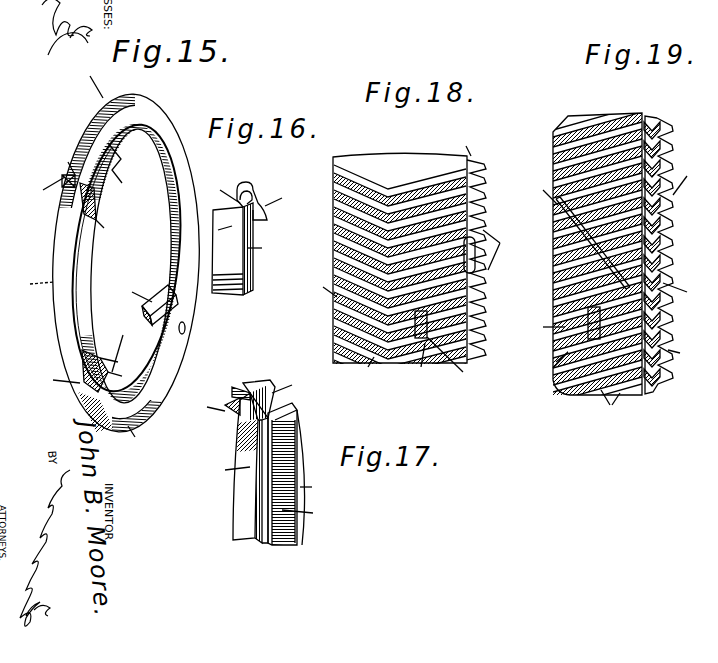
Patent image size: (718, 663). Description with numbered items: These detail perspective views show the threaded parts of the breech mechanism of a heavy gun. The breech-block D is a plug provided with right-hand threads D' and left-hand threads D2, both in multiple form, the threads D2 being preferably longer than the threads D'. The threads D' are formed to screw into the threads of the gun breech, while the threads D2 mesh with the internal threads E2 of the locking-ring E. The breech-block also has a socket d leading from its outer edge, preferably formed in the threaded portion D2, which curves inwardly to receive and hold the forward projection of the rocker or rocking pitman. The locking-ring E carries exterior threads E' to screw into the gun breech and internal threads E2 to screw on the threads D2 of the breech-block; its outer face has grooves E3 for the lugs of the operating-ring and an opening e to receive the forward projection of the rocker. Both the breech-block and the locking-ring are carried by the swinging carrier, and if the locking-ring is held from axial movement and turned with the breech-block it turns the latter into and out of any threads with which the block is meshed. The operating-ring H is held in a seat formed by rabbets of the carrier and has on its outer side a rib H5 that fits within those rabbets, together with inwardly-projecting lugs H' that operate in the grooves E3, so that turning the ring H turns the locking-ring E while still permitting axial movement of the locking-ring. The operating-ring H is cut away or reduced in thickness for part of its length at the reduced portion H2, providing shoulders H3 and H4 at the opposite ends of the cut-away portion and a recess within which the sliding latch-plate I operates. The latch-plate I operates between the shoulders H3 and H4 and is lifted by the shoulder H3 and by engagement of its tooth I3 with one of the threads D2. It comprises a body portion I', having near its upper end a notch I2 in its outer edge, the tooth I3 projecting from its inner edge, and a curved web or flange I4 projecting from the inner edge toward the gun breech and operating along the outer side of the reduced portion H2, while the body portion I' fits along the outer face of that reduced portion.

In FIG. 15, the operating-ring H is at (125, 260).
In FIG. 15, the inwardly-projecting lugs H' is at (130, 267).
In FIG. 15, the reduced portion H2 is at (31, 282).
In FIG. 15, the shoulder H3 is at (51, 380).
In FIG. 15, the shoulder H4 is at (58, 195).
In FIG. 15, the rib H5 is at (118, 256).
In FIG. 16, the latch-plate I is at (240, 249).
In FIG. 17, the latch-plate I is at (262, 474).
In FIG. 17, the body portion I' is at (235, 468).
In FIG. 16, the notch I2 is at (235, 188).
In FIG. 17, the notch I2 is at (271, 394).
In FIG. 16, the tooth I3 is at (285, 197).
In FIG. 17, the tooth I3 is at (215, 404).
In FIG. 16, the curved web or flange I4 is at (225, 230).
In FIG. 17, the curved web or flange I4 is at (315, 522).
In FIG. 18, the breech-block D is at (402, 258).
In FIG. 18, the right-hand threads D' is at (389, 333).
In FIG. 18, the left-hand threads D2 is at (464, 275).
In FIG. 18, the socket d is at (445, 348).
In FIG. 19, the locking-ring E is at (599, 246).
In FIG. 19, the exterior threads E' is at (613, 386).
In FIG. 19, the internal threads E2 is at (674, 255).
In FIG. 19, the grooves E3 is at (579, 228).
In FIG. 19, the opening e is at (564, 323).
In FIG. 19, the chevron teeth d' is at (673, 254).